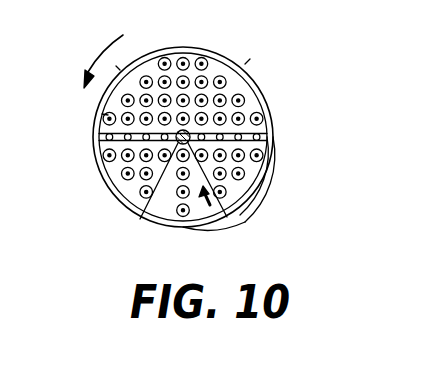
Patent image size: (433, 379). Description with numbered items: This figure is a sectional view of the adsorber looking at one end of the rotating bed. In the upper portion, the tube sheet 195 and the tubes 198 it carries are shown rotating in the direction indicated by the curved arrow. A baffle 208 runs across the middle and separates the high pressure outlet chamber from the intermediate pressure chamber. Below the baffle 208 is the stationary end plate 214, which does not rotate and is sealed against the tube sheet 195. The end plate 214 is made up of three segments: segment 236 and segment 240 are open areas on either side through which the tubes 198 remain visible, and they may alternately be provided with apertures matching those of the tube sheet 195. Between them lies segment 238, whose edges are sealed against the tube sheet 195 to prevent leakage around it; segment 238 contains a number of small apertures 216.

The tube sheet 195 is at (237, 84).
The tubes 198 is at (210, 53).
The baffle 208 is at (106, 138).
The end plate 214 is at (240, 227).
The small apertures 216 is at (191, 207).
The segment 236 is at (101, 174).
The segment 238 is at (168, 205).
The segment 240 is at (261, 177).